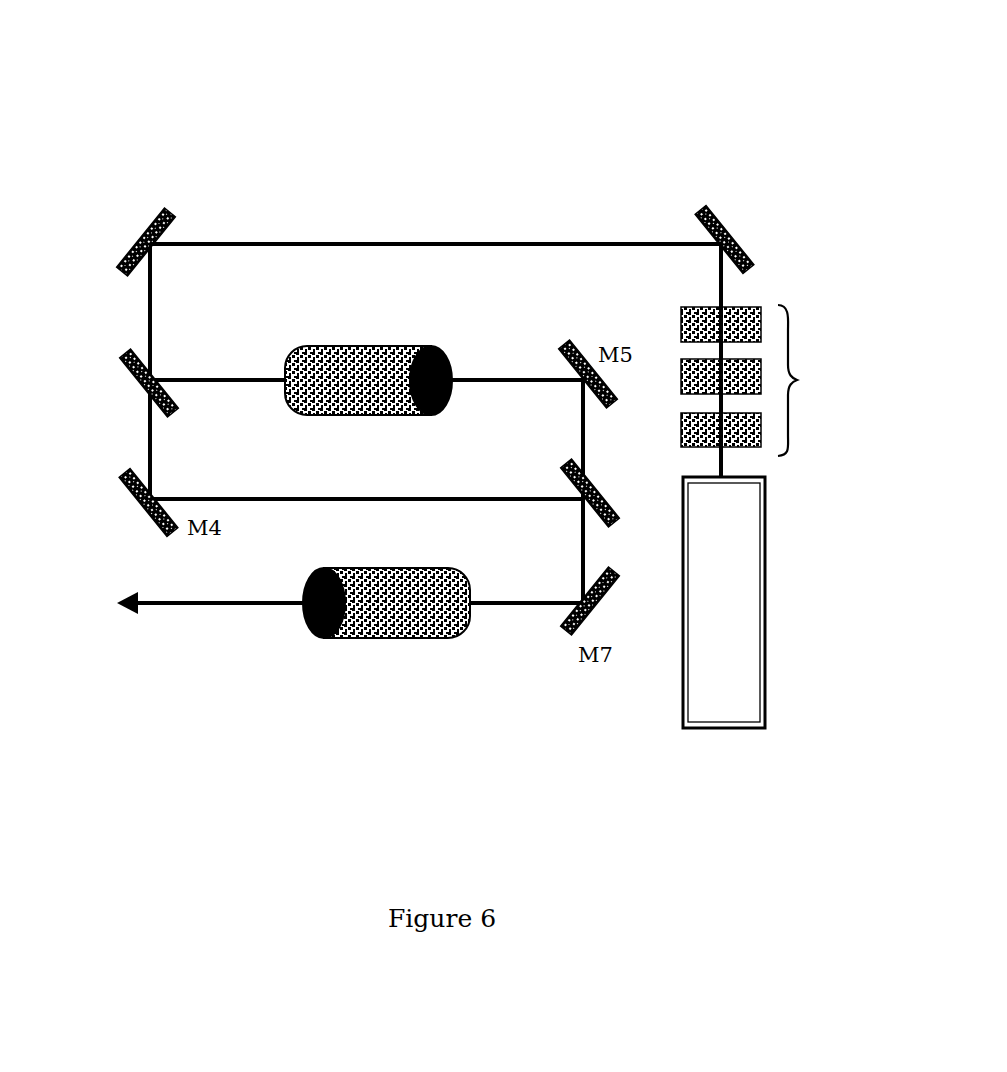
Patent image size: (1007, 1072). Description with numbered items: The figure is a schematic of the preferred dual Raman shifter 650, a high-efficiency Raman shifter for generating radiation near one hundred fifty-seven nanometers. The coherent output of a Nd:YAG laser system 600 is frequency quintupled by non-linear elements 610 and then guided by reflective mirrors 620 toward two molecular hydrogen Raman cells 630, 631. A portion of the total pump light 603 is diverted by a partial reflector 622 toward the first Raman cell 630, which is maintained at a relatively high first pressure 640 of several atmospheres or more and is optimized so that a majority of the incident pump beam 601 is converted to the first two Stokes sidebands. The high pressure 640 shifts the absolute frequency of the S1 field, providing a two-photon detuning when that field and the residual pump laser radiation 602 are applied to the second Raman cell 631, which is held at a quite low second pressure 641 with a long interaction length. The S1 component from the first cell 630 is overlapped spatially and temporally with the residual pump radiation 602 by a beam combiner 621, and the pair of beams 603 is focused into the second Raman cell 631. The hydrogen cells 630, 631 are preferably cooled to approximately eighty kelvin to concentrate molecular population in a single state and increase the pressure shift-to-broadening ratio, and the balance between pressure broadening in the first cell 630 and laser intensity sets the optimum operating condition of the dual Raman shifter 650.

The Nd:YAG laser system 600 is at (767, 523).
The incident pump beam 601 is at (210, 378).
The residual pump laser radiation 602 is at (213, 494).
The pump light 603 is at (146, 305).
The non-linear elements 610 is at (803, 351).
The reflective mirrors 620 is at (147, 220).
The beam combiner 621 is at (613, 521).
The partial reflector 622 is at (128, 375).
The first Raman cell 630 is at (384, 363).
The second Raman cell 631 is at (399, 602).
The first pressure 640 is at (323, 348).
The second pressure 641 is at (355, 570).
The dual Raman shifter 650 is at (535, 75).